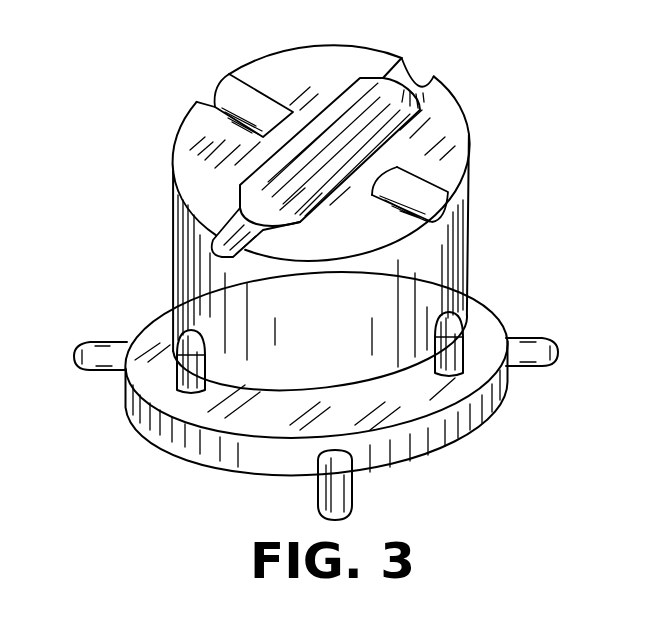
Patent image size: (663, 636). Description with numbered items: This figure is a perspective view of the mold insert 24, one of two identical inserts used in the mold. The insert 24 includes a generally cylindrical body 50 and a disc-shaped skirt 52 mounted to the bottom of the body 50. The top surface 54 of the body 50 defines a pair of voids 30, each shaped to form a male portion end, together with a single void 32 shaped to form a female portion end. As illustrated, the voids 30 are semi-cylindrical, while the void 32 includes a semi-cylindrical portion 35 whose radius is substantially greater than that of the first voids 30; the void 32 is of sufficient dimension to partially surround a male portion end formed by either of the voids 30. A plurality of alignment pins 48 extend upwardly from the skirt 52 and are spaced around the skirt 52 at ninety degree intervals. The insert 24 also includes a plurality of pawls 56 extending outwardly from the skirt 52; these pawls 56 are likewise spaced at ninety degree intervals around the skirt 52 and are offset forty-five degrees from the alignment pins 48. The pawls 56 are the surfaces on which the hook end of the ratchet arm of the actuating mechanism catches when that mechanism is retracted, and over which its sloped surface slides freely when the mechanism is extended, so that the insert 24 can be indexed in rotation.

The mold insert 24 is at (528, 111).
The voids 30 is at (250, 92).
The void 32 is at (342, 110).
The semi-cylindrical portion 35 is at (268, 177).
The alignment pins 48 is at (162, 330).
The body 50 is at (468, 237).
The skirt 52 is at (470, 432).
The top surface 54 is at (192, 142).
The pawls 56 is at (98, 373).